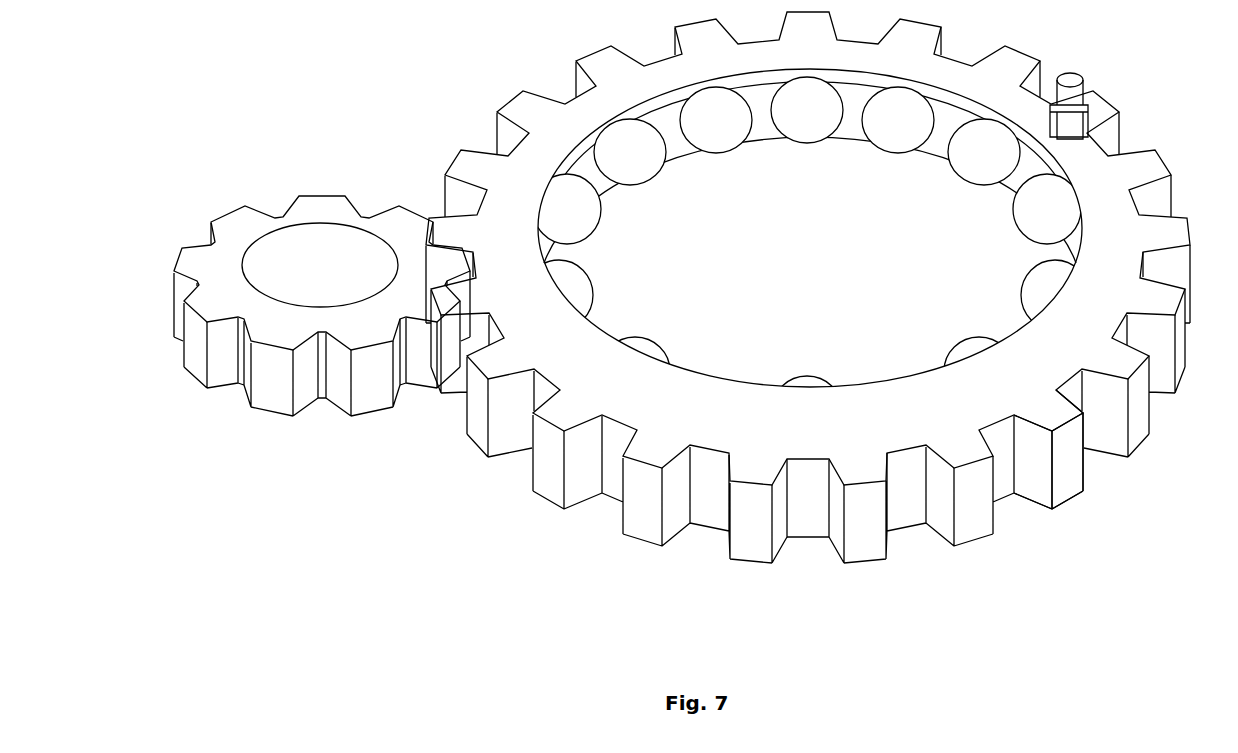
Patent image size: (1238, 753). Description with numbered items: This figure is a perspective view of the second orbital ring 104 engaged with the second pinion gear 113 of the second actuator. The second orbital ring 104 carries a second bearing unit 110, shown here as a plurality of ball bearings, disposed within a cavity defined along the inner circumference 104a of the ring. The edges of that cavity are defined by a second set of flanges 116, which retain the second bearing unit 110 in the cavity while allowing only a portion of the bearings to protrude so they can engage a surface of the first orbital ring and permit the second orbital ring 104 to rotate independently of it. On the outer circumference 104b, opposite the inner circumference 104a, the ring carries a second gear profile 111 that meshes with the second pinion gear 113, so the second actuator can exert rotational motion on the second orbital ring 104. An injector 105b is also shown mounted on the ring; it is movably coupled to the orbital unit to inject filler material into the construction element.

The second orbital ring 104 is at (588, 104).
The inner circumference 104a is at (620, 198).
The outer circumference 104b is at (1003, 487).
The injector 105b is at (1107, 84).
The second bearing unit 110 is at (816, 193).
The second gear profile 111 is at (1094, 460).
The second pinion gear 113 is at (293, 206).
The second set of flanges 116 is at (709, 203).